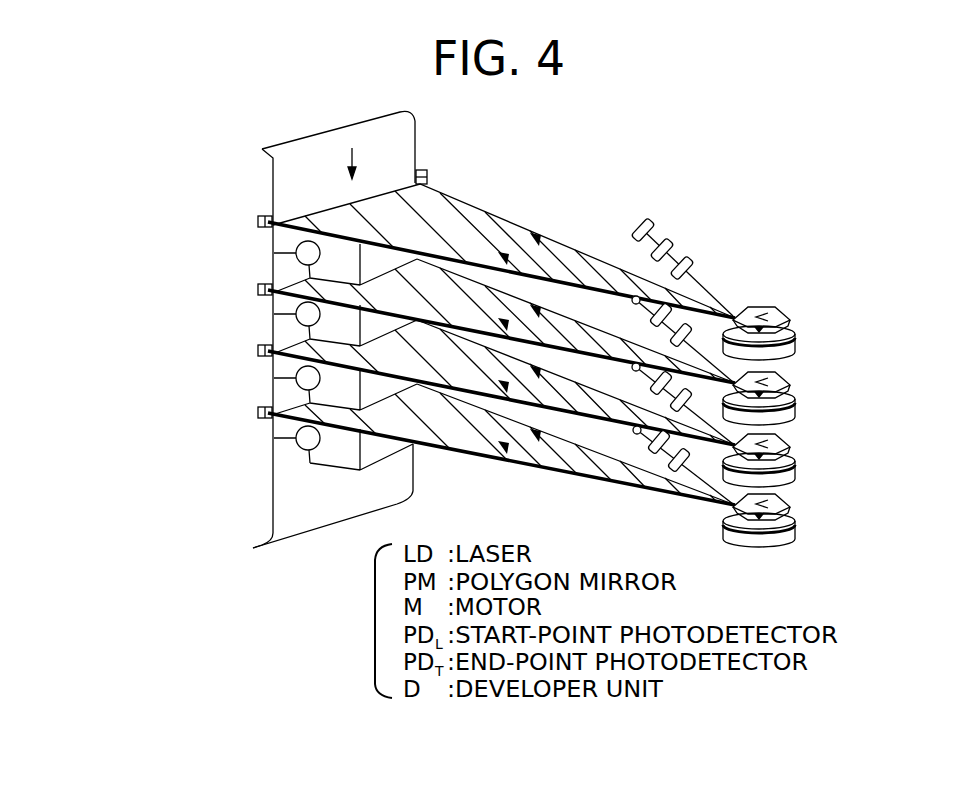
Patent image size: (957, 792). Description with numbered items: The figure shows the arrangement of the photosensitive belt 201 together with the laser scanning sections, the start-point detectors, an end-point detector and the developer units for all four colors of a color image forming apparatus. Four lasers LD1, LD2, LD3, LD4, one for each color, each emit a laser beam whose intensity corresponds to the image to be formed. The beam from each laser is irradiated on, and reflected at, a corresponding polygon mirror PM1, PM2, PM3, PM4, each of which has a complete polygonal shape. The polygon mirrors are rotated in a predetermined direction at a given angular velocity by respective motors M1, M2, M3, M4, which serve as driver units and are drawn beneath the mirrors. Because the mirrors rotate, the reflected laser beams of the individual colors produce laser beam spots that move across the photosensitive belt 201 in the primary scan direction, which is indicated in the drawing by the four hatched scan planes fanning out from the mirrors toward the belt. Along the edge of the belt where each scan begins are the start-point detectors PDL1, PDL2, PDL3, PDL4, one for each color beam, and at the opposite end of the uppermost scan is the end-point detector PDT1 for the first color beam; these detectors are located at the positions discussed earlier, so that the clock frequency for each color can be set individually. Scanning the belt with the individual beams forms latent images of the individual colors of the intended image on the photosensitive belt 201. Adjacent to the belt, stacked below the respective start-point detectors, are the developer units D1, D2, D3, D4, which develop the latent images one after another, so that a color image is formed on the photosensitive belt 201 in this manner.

The photosensitive belt 201 is at (283, 181).
The start-point detector PDL1 is at (257, 222).
The start-point detector PDL2 is at (257, 290).
The start-point detector PDL3 is at (257, 351).
The start-point detector PDL4 is at (257, 413).
The end-point detector PDT1 is at (426, 169).
The developer unit D1 is at (273, 253).
The developer unit D2 is at (273, 314).
The developer unit D3 is at (273, 378).
The developer unit D4 is at (273, 438).
The laser LD1 is at (652, 227).
The laser LD2 is at (633, 300).
The laser LD3 is at (633, 367).
The laser LD4 is at (634, 430).
The polygon mirror PM1 is at (793, 320).
The polygon mirror PM2 is at (793, 385).
The polygon mirror PM3 is at (793, 447).
The polygon mirror PM4 is at (793, 507).
The motor M1 is at (797, 345).
The motor M2 is at (797, 410).
The motor M3 is at (797, 472).
The motor M4 is at (797, 532).